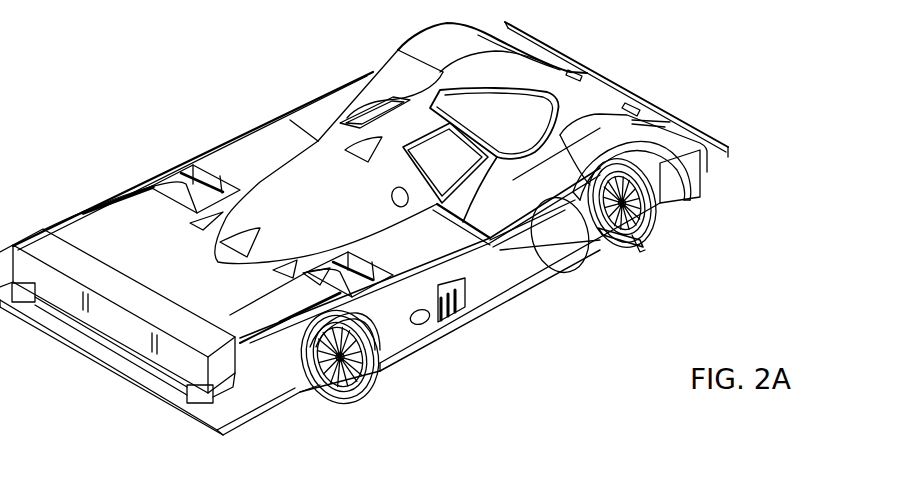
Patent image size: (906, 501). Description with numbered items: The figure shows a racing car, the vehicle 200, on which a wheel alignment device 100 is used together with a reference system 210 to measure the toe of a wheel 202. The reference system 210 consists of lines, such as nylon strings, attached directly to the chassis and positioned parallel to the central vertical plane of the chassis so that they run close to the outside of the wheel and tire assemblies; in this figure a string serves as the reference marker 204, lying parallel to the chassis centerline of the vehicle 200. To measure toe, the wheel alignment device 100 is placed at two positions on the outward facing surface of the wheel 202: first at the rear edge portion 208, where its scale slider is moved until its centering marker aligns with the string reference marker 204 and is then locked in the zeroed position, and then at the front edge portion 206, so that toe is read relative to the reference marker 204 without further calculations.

The vehicle 200 is at (197, 53).
The wheel 202 is at (355, 388).
The reference marker 204 is at (262, 420).
The front edge portion 206 is at (648, 208).
The rear edge portion 208 is at (592, 245).
The reference system 210 is at (83, 358).
The wheel alignment device 100 is at (628, 245).